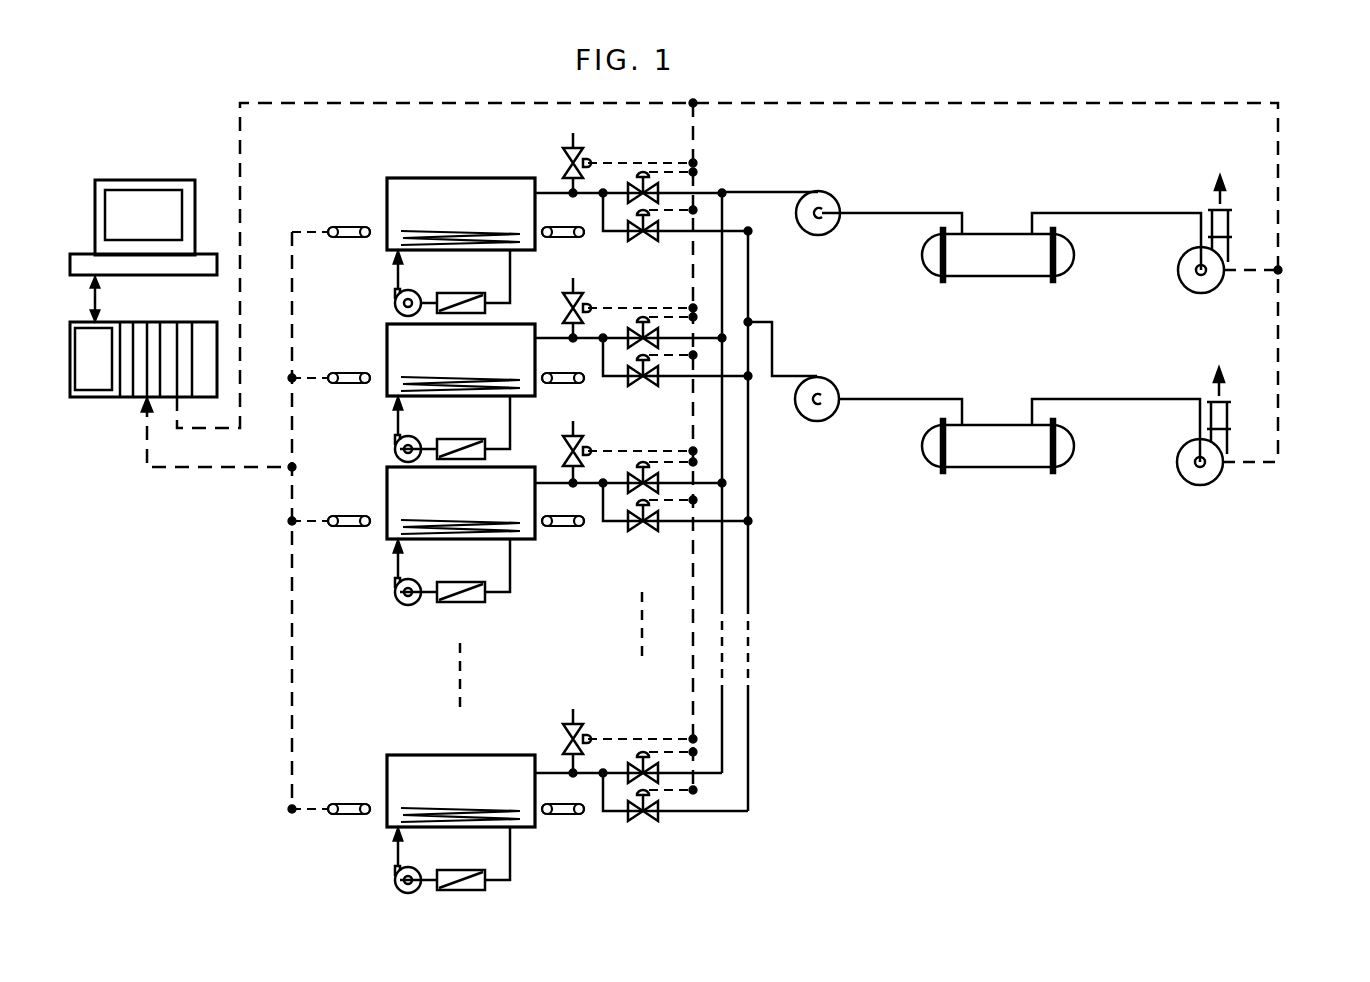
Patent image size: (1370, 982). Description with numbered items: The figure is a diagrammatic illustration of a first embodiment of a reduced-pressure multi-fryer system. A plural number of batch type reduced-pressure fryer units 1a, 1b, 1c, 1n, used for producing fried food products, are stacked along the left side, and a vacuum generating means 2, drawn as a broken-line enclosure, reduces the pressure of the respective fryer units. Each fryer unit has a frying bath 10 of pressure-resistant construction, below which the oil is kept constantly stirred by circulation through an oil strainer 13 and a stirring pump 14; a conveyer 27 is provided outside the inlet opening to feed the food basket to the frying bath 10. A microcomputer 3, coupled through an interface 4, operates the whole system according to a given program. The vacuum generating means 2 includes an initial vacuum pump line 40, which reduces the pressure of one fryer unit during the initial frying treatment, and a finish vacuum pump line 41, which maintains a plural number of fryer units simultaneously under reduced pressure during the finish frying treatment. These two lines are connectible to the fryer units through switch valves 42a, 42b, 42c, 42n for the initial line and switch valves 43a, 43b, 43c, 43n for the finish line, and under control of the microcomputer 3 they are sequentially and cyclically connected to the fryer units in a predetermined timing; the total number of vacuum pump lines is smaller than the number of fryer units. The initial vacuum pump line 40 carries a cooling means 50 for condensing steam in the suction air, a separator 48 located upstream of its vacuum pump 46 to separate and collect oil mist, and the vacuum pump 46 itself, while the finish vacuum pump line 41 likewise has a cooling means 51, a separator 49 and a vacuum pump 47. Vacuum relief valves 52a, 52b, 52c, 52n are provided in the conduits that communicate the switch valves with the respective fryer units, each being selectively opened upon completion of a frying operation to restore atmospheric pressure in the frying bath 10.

The reduced-pressure fryer unit 1a is at (434, 217).
The reduced-pressure fryer unit 1b is at (372, 362).
The reduced-pressure fryer unit 1c is at (372, 505).
The reduced-pressure fryer unit 1n is at (372, 803).
The vacuum generating means 2 is at (1175, 72).
The microcomputer 3 is at (137, 190).
The interface 4 is at (95, 390).
The frying bath 10 is at (455, 180).
The oil strainer 13 is at (460, 296).
The stirring pump 14 is at (396, 305).
The conveyer 27 is at (345, 228).
The initial vacuum pump line 40 is at (1040, 251).
The finish vacuum pump line 41 is at (1051, 430).
The switch valve 42a is at (642, 175).
The switch valve 42b is at (642, 320).
The switch valve 42c is at (642, 465).
The switch valve 42n is at (642, 755).
The switch valve 43a is at (642, 240).
The switch valve 43b is at (640, 385).
The switch valve 43c is at (638, 532).
The switch valve 43n is at (643, 822).
The vacuum pump 46 is at (1192, 290).
The vacuum pump 47 is at (1192, 482).
The separator 48 is at (1002, 278).
The separator 49 is at (1002, 470).
The cooling means 50 is at (820, 236).
The cooling means 51 is at (820, 422).
The vacuum relief valve 52a is at (560, 150).
The vacuum relief valve 52b is at (562, 300).
The vacuum relief valve 52c is at (562, 442).
The vacuum relief valve 52n is at (562, 727).